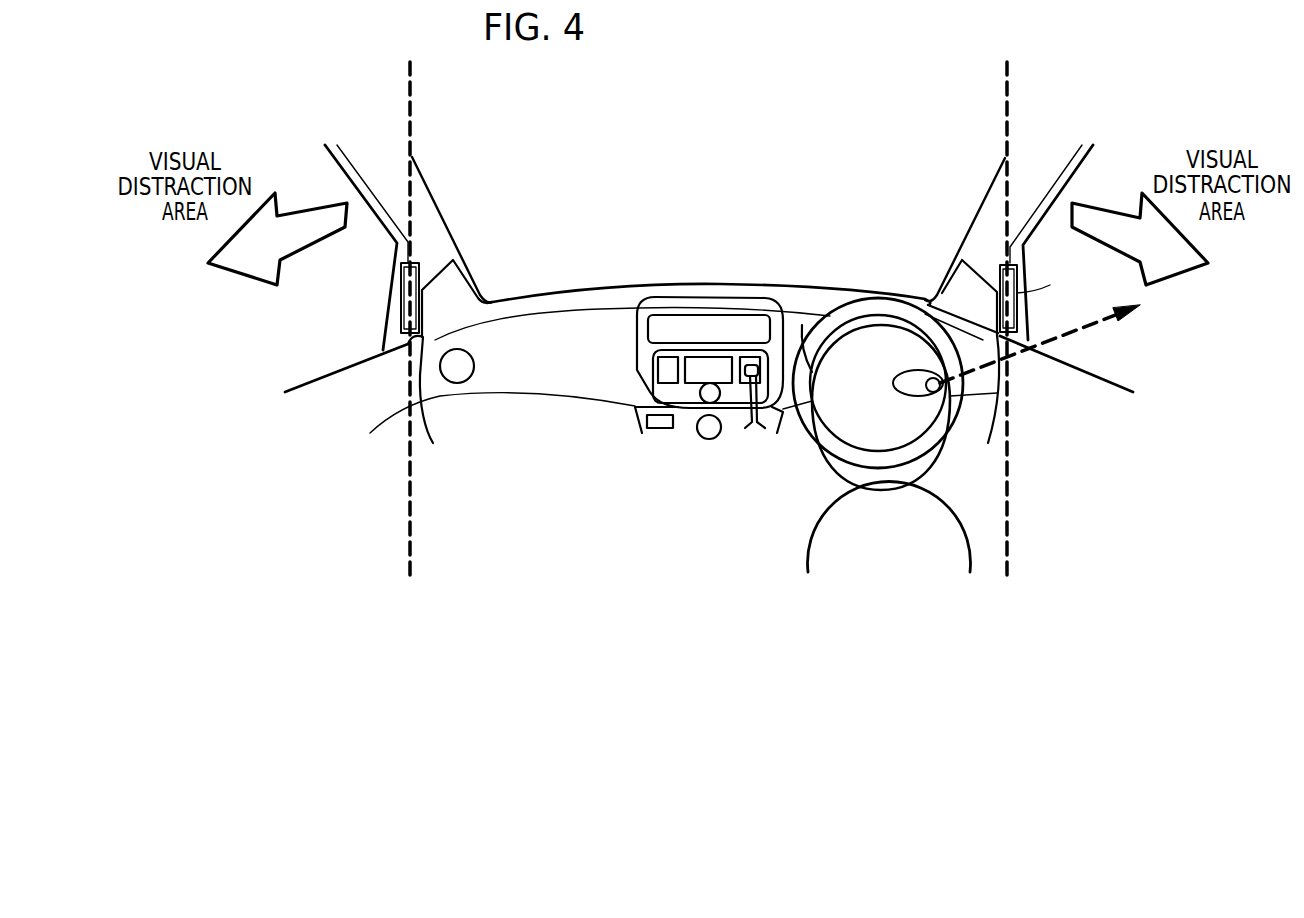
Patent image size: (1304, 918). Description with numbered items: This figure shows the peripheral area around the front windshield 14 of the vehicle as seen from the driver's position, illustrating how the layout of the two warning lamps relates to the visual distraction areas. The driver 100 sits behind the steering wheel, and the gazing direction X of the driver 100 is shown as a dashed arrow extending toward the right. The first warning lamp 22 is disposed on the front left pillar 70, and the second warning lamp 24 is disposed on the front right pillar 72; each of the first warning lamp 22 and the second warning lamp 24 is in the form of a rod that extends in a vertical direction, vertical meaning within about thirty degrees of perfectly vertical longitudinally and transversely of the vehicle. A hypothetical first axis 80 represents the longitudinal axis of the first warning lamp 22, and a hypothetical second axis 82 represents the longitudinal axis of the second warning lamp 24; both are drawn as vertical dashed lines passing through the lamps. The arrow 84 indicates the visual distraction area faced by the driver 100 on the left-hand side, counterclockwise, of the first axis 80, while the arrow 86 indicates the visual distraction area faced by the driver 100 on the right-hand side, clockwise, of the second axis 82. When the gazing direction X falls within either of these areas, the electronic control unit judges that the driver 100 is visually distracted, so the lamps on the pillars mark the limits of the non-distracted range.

The front windshield 14 is at (545, 277).
The first warning lamp 22 is at (401, 298).
The second warning lamp 24 is at (1020, 288).
The front left pillar 70 is at (432, 205).
The front right pillar 72 is at (985, 201).
The first axis 80 is at (415, 117).
The second axis 82 is at (1003, 118).
The arrow 84 is at (318, 216).
The arrow 86 is at (1118, 225).
The driver 100 is at (888, 452).
The gazing direction X is at (1073, 328).